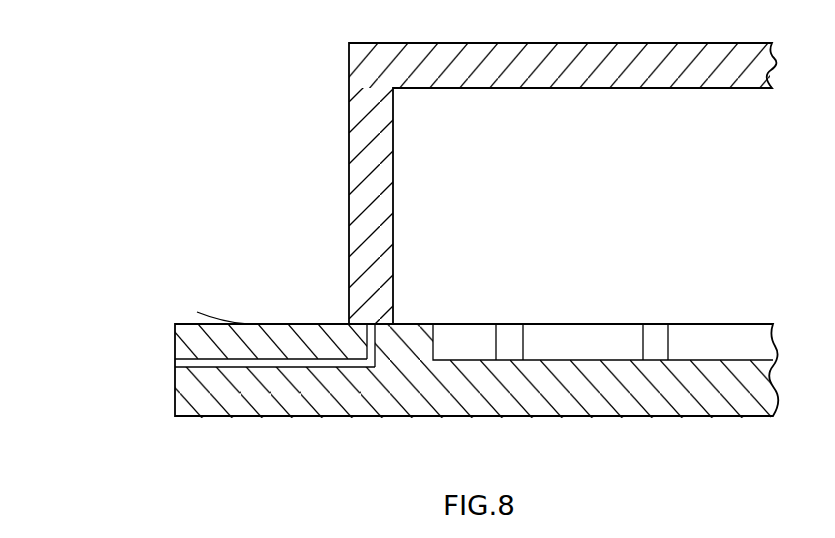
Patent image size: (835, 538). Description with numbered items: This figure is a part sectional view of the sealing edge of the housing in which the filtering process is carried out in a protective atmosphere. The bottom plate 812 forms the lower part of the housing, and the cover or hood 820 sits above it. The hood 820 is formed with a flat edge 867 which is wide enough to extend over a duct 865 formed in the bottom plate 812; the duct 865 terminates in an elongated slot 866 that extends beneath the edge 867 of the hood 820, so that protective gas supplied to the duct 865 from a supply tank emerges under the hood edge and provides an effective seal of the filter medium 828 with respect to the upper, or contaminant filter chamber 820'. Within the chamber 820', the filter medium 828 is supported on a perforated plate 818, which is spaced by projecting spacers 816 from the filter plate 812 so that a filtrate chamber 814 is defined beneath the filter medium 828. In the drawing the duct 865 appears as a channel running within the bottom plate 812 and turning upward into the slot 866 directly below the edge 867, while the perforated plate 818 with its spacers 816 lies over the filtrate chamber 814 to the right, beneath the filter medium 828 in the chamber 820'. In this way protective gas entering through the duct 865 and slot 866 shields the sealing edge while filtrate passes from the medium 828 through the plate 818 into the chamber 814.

The bottom plate 812 is at (507, 407).
The filtrate chamber 814 is at (589, 352).
The projecting spacers 816 is at (668, 341).
The perforated plate 818 is at (697, 324).
The hood 820 is at (562, 167).
The contaminant filter chamber 820' is at (582, 206).
The filter medium 828 is at (216, 318).
The duct 865 is at (168, 368).
The elongated slot 866 is at (372, 348).
The edge of the hood 867 is at (358, 319).